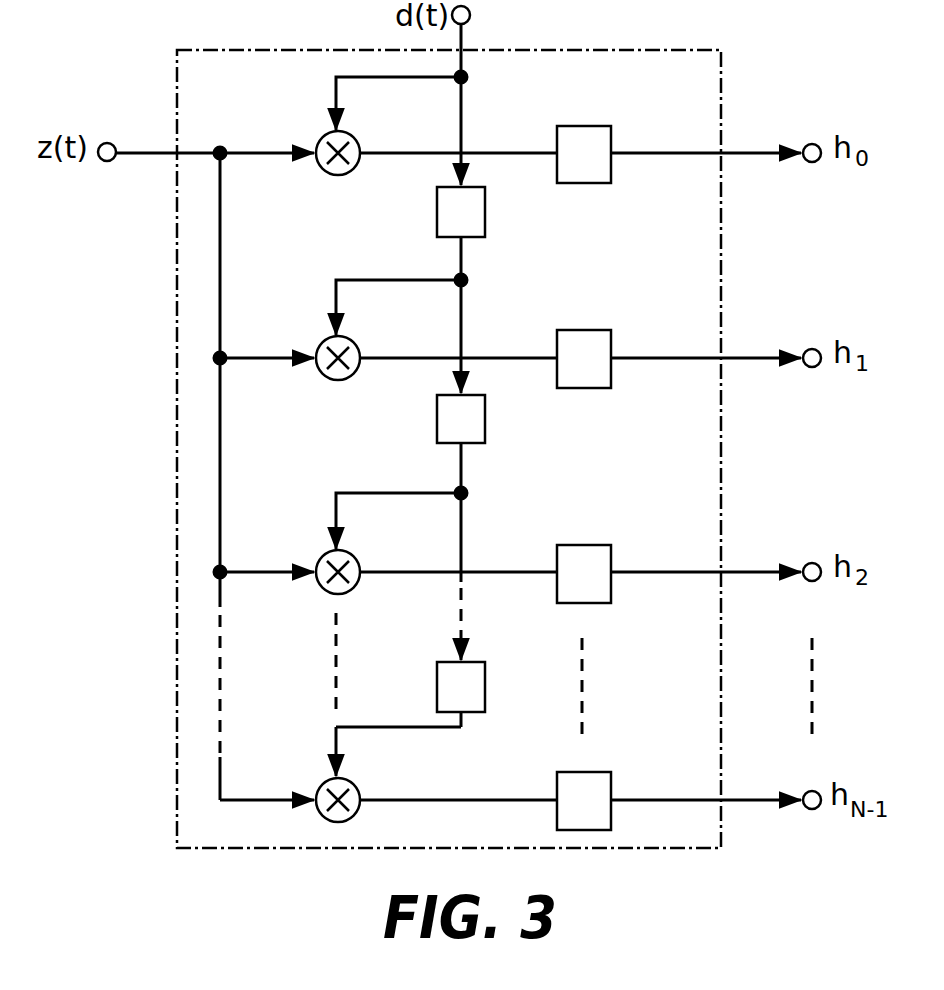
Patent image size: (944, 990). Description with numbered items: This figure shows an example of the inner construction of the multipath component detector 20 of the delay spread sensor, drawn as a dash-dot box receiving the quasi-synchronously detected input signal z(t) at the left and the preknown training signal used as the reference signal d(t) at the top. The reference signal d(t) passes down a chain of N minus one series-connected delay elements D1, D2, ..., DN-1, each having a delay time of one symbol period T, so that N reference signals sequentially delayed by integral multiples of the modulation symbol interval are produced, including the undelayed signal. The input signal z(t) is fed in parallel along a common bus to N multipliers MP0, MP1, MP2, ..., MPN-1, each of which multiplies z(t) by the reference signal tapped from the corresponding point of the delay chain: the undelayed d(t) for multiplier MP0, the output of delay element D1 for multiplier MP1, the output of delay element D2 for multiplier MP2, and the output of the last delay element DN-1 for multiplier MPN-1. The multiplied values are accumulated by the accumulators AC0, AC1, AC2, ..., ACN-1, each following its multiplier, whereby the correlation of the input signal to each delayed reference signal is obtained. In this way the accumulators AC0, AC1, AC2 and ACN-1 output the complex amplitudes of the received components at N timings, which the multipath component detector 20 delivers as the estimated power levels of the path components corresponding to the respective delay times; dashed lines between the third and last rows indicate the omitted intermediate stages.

The multipath component detector 20 is at (178, 377).
The multiplier MP0 is at (327, 136).
The multiplier MP1 is at (318, 343).
The multiplier MP2 is at (319, 554).
The multiplier MPN-1 is at (321, 786).
The delay element D1 is at (485, 213).
The delay element D2 is at (485, 417).
The delay element DN-1 is at (437, 677).
The accumulator AC0 is at (613, 130).
The accumulator AC1 is at (612, 333).
The accumulator AC2 is at (612, 547).
The accumulator ACN-1 is at (597, 772).